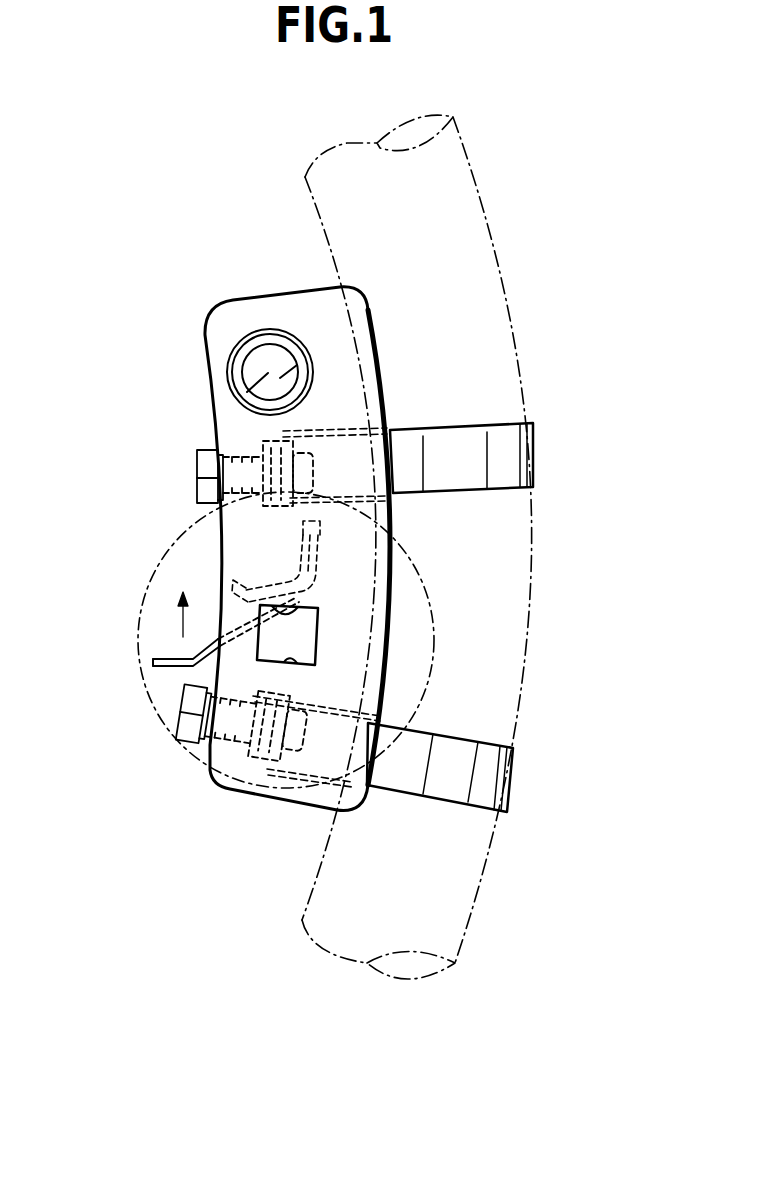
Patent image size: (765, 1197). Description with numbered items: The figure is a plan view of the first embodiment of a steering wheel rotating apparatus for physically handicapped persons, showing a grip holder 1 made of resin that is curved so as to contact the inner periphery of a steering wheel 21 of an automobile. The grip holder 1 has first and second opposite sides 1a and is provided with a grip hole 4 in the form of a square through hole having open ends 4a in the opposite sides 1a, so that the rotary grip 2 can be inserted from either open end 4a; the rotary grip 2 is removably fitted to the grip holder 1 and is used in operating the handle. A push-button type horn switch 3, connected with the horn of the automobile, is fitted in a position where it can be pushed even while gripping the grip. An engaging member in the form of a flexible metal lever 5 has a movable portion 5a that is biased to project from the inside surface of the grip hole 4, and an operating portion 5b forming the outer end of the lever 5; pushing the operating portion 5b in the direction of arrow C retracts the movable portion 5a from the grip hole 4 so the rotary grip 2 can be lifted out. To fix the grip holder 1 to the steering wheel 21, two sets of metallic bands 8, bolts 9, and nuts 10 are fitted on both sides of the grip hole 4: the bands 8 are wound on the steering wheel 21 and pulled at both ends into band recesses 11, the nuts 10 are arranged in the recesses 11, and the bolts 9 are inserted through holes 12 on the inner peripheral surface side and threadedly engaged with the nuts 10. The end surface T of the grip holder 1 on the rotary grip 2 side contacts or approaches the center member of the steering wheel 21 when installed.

The grip holder 1 is at (228, 303).
The opposite sides 1a is at (293, 320).
The rotary grip 2 is at (126, 605).
The horn switch 3 is at (253, 367).
The grip hole 4 is at (307, 640).
The open ends 4a is at (291, 660).
The lever 5 is at (155, 653).
The movable portion 5a is at (302, 598).
The operating portion 5b is at (153, 668).
The metallic bands 8 is at (533, 457).
The bolts 9 is at (196, 487).
The nuts 10 is at (268, 443).
The band recesses 11 is at (387, 405).
The holes 12 is at (208, 450).
The steering wheel 21 is at (473, 160).
The arrow C is at (183, 591).
The end surface T is at (280, 752).